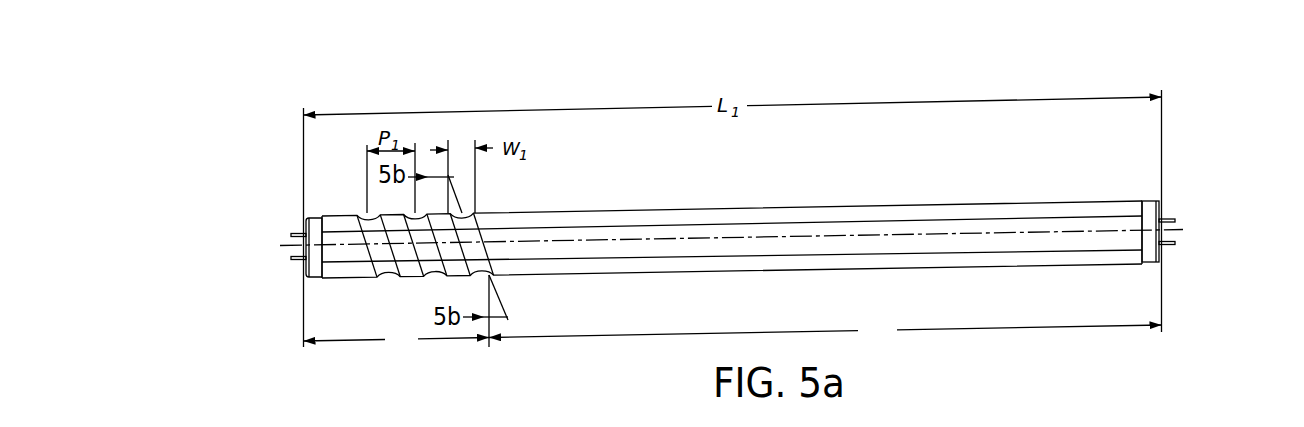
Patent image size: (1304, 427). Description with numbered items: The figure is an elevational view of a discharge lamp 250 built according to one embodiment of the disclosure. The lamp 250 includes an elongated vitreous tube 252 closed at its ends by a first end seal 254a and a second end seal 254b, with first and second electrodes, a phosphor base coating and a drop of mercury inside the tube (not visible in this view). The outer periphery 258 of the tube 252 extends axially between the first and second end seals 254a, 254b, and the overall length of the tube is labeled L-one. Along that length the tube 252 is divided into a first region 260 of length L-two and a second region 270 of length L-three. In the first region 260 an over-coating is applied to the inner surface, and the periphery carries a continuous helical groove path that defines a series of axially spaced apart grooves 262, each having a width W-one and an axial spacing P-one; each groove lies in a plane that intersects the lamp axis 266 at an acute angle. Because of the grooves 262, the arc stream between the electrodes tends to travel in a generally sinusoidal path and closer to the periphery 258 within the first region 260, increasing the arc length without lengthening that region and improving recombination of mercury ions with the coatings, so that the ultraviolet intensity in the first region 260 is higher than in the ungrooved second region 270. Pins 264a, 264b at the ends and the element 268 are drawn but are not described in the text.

The discharge lamp 250 is at (981, 86).
The elongated vitreous tube 252 is at (780, 206).
The first end seal 254a is at (307, 218).
The second end seal 254b is at (1161, 258).
The outer periphery 258 is at (592, 210).
The first region 260 is at (422, 340).
The grooves 262 is at (442, 277).
The first electrical pins 264a is at (292, 235).
The second electrical pins 264b is at (292, 258).
The axis 266 is at (973, 235).
The lamp section 268 is at (787, 424).
The second region 270 is at (1030, 327).